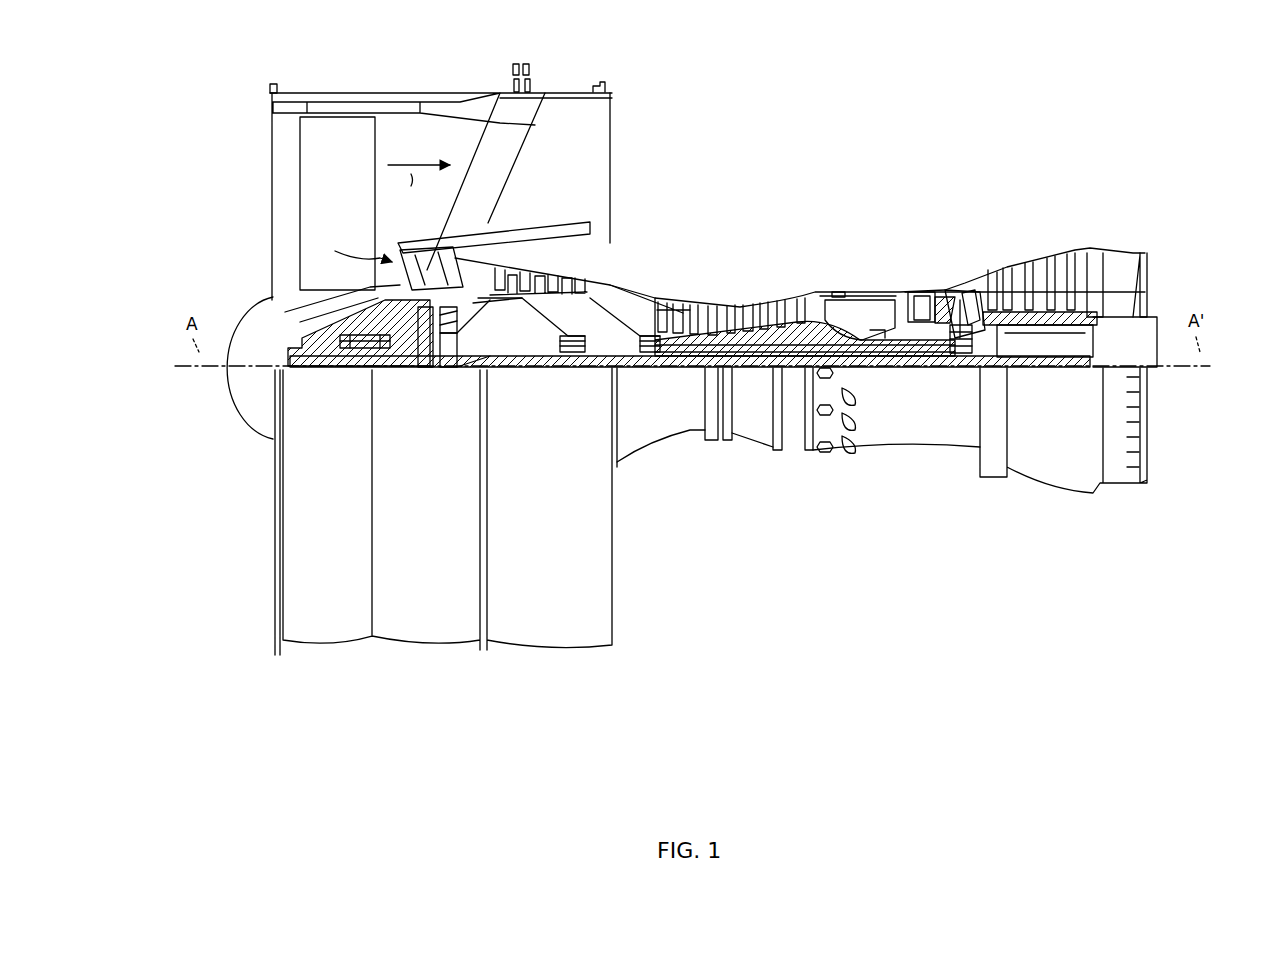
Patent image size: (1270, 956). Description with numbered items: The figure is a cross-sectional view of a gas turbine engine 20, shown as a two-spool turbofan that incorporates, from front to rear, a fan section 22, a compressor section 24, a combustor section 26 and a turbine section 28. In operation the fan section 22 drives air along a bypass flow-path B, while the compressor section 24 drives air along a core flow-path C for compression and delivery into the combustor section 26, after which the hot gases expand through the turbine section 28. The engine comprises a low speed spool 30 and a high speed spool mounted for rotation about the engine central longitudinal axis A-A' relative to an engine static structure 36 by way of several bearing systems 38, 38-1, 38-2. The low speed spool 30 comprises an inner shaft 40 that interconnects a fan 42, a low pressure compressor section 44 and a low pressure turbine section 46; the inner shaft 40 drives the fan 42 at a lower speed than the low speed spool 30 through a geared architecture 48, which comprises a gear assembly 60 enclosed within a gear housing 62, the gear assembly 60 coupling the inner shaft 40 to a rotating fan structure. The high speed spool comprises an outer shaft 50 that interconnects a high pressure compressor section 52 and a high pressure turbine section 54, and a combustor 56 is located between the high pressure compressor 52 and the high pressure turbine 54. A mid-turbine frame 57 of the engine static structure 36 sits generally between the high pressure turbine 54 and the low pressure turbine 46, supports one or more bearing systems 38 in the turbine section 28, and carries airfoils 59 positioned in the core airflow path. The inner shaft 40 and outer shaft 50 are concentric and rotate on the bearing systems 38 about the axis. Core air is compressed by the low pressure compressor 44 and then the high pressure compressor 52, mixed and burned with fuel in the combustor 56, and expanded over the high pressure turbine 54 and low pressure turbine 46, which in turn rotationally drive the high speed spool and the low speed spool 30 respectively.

The gas turbine engine 20 is at (900, 120).
The fan section 22 is at (478, 72).
The compressor section 24 is at (486, 192).
The combustor section 26 is at (907, 190).
The turbine section 28 is at (1095, 192).
The low speed spool 30 is at (755, 380).
The engine static structure 36 is at (252, 665).
The bearing system 38 is at (958, 362).
The bearing system 38-1 is at (343, 350).
The bearing system 38-2 is at (572, 355).
The inner shaft 40 is at (630, 372).
The fan 42 is at (345, 204).
The low pressure compressor section 44 is at (548, 276).
The low pressure turbine section 46 is at (1037, 265).
The geared architecture 48 is at (450, 380).
The outer shaft 50 is at (862, 356).
The high pressure compressor section 52 is at (740, 338).
The high pressure turbine section 54 is at (922, 290).
The combustor 56 is at (858, 312).
The mid-turbine frame 57 is at (958, 300).
The airfoils 59 is at (963, 300).
The gear assembly 60 is at (455, 345).
The gear housing 62 is at (447, 322).